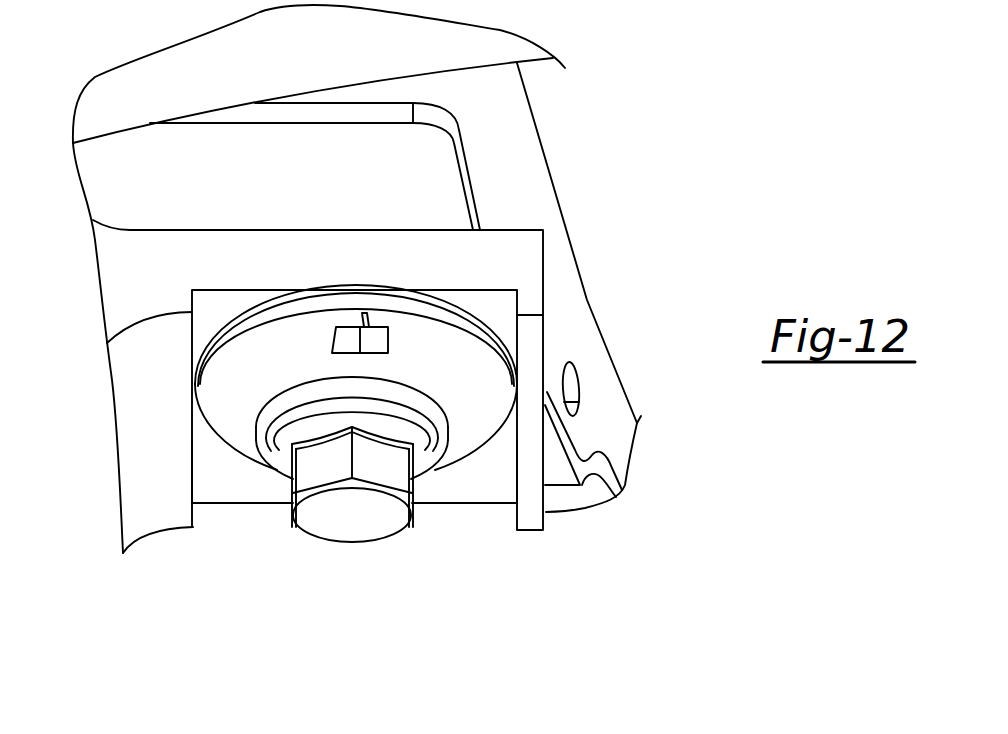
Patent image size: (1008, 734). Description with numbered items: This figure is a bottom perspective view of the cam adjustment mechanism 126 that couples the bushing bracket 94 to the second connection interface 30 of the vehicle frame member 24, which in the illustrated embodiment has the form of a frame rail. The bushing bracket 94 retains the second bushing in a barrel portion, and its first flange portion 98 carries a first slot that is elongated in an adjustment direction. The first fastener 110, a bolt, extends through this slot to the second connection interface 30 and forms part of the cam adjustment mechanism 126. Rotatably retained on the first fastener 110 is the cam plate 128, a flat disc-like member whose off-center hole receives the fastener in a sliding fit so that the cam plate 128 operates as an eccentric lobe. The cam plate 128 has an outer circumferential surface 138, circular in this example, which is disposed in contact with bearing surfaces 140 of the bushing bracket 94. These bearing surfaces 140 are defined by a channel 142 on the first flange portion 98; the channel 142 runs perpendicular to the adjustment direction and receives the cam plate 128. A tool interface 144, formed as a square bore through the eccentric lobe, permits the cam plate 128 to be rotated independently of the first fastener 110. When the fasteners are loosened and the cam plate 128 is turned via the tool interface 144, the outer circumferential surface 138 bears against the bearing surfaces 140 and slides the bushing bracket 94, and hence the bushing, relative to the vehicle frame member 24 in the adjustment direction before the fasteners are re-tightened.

The vehicle frame member 24 is at (442, 52).
The second connection interface 30 is at (422, 175).
The bushing bracket 94 is at (103, 374).
The first flange portion 98 is at (208, 257).
The first fastener 110 is at (349, 512).
The cam adjustment mechanism 126 is at (435, 553).
The cam plate 128 is at (473, 380).
The outer circumferential surface 138 is at (483, 330).
The bearing surfaces 140 is at (203, 470).
The channel 142 is at (260, 490).
The tool interface 144 is at (365, 338).